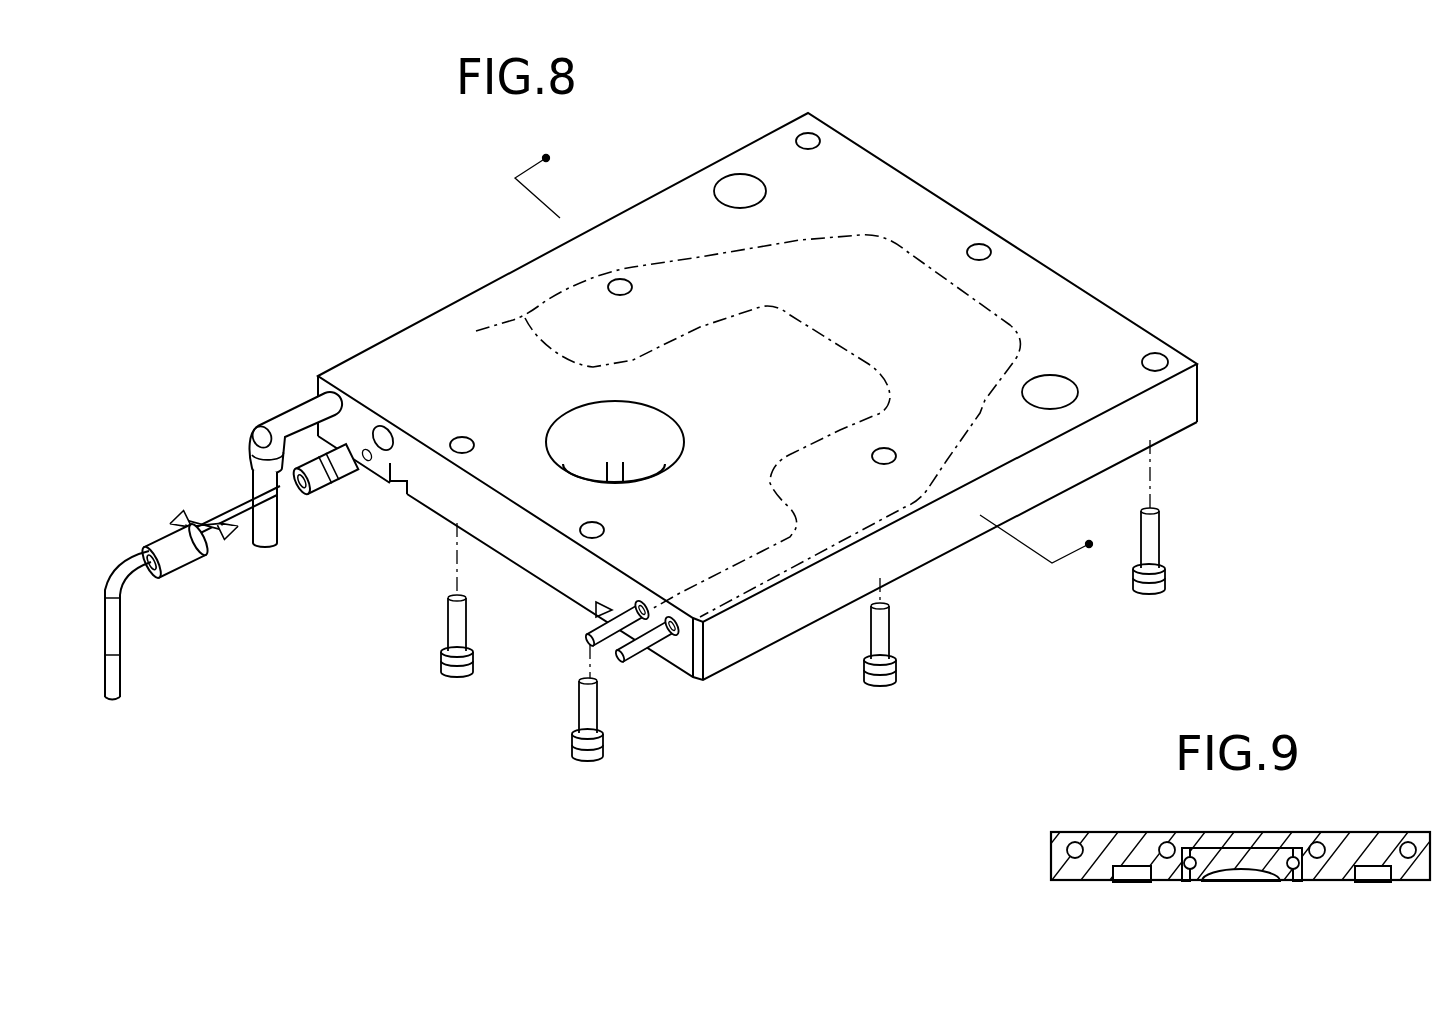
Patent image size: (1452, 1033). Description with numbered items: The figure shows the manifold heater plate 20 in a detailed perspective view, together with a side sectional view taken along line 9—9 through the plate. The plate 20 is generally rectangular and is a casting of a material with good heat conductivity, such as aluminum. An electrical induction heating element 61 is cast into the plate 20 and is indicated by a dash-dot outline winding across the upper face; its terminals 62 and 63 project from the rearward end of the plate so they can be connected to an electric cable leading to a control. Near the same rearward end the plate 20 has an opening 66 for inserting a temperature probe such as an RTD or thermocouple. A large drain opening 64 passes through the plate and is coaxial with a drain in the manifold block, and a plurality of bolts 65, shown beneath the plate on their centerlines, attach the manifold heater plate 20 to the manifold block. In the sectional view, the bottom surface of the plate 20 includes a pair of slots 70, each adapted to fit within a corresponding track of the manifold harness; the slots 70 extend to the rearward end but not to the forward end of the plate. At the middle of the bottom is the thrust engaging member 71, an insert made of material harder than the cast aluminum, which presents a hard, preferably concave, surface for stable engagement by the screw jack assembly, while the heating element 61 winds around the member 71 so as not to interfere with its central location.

In FIG. 8, the section line 9— 9 is at (816, 349).
In FIG. 8, the manifold heater plate 20 is at (918, 195).
In FIG. 9, the manifold heater plate 20 is at (1095, 881).
In FIG. 8, the electrical induction heating element 61 is at (730, 426).
In FIG. 9, the electrical induction heating element 61 is at (1162, 844).
In FIG. 8, the terminal 62 is at (602, 645).
In FIG. 8, the terminal 63 is at (642, 655).
In FIG. 8, the drain opening 64 is at (656, 414).
In FIG. 8, the bolts 65 is at (441, 655).
In FIG. 8, the opening 66 is at (350, 492).
In FIG. 8, the slots 70 is at (410, 496).
In FIG. 9, the slots 70 is at (1145, 881).
In FIG. 9, the thrust engaging member 71 is at (1205, 862).